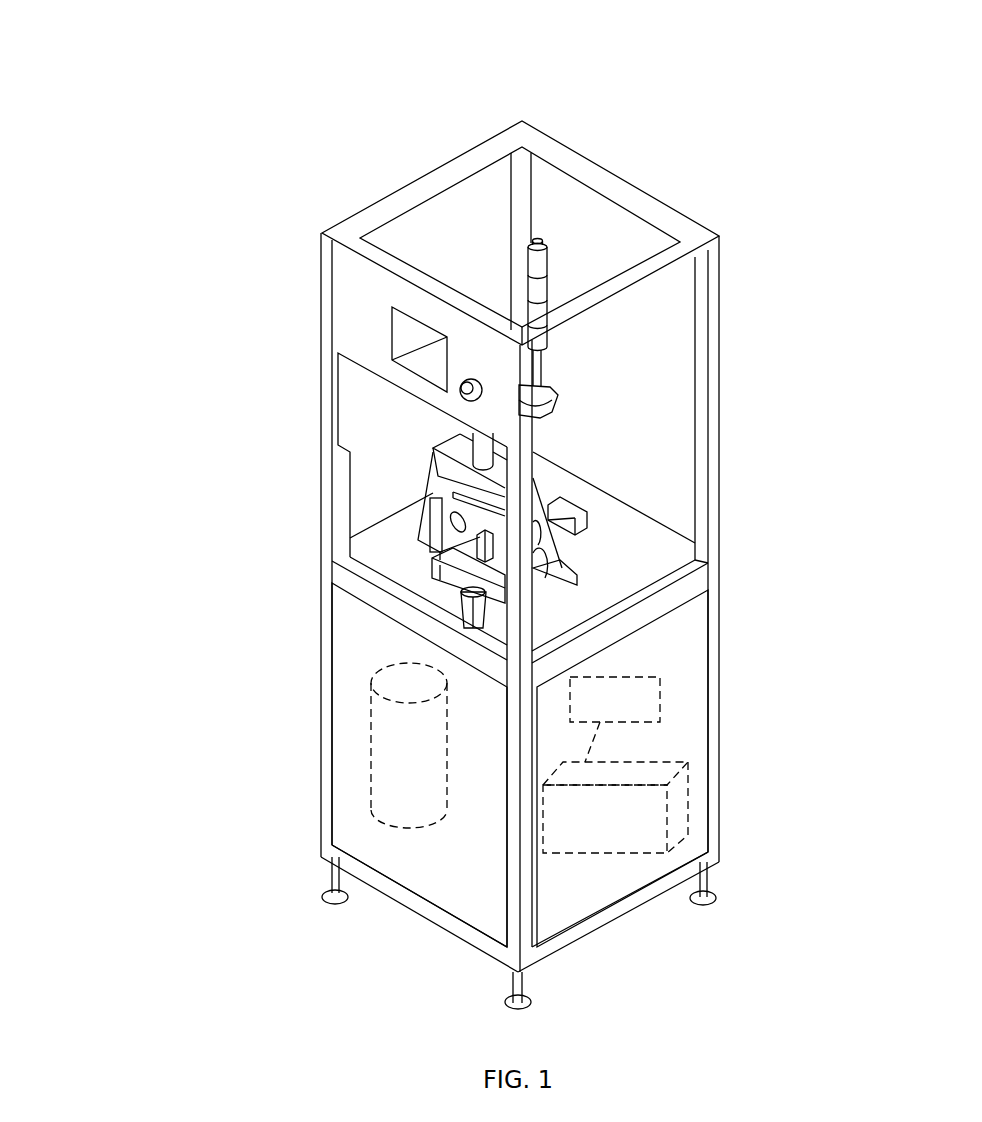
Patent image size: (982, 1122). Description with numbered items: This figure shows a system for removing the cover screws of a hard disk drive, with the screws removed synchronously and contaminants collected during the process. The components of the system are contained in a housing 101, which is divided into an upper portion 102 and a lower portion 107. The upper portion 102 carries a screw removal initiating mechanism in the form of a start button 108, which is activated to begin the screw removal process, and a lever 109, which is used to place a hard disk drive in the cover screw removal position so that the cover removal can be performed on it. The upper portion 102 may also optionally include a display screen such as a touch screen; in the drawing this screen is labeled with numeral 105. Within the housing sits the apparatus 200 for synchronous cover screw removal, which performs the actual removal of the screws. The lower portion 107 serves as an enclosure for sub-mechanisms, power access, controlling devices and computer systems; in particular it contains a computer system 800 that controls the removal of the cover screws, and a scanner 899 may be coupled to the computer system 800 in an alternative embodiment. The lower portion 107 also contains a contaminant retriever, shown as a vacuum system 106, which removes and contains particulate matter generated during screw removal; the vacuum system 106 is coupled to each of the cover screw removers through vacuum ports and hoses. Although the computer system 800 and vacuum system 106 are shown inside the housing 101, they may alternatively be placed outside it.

The housing 101 is at (686, 213).
The upper portion 102 is at (721, 337).
The display panel 105 is at (410, 333).
The vacuum system 106 is at (371, 753).
The lower portion 107 is at (321, 642).
The start button 108 is at (470, 379).
The lever 109 is at (543, 278).
The apparatus for synchronous cover screw removal 200 is at (440, 533).
The computer system 800 is at (692, 773).
The scanner 899 is at (662, 690).